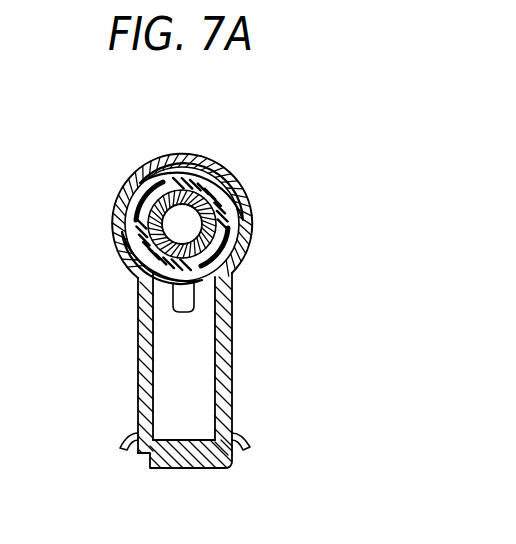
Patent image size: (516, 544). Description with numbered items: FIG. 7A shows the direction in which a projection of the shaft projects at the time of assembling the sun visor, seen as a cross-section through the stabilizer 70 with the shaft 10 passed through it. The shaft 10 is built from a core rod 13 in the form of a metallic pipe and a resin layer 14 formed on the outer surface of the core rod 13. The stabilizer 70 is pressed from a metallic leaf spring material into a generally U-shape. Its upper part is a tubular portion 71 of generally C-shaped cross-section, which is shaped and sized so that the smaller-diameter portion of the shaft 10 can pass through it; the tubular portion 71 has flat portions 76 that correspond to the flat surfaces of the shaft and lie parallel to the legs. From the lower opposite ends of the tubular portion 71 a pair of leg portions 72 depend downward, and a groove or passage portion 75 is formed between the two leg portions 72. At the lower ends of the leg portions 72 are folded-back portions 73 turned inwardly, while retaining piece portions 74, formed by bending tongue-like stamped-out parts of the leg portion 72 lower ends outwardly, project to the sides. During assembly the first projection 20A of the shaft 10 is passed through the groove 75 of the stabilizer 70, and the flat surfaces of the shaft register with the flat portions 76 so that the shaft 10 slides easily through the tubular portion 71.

The stabilizer 70 is at (215, 162).
The tubular portion 71 is at (240, 173).
The flat portions 76 is at (115, 252).
The resin layer 14 is at (257, 217).
The core rod 13 is at (233, 235).
The shaft 10 is at (117, 233).
The first projection 20A is at (195, 306).
The leg portions 72 is at (138, 343).
The groove (passage portion) 75 is at (190, 398).
The folded-back portions 73 is at (182, 436).
The retaining piece portions 74 is at (120, 448).